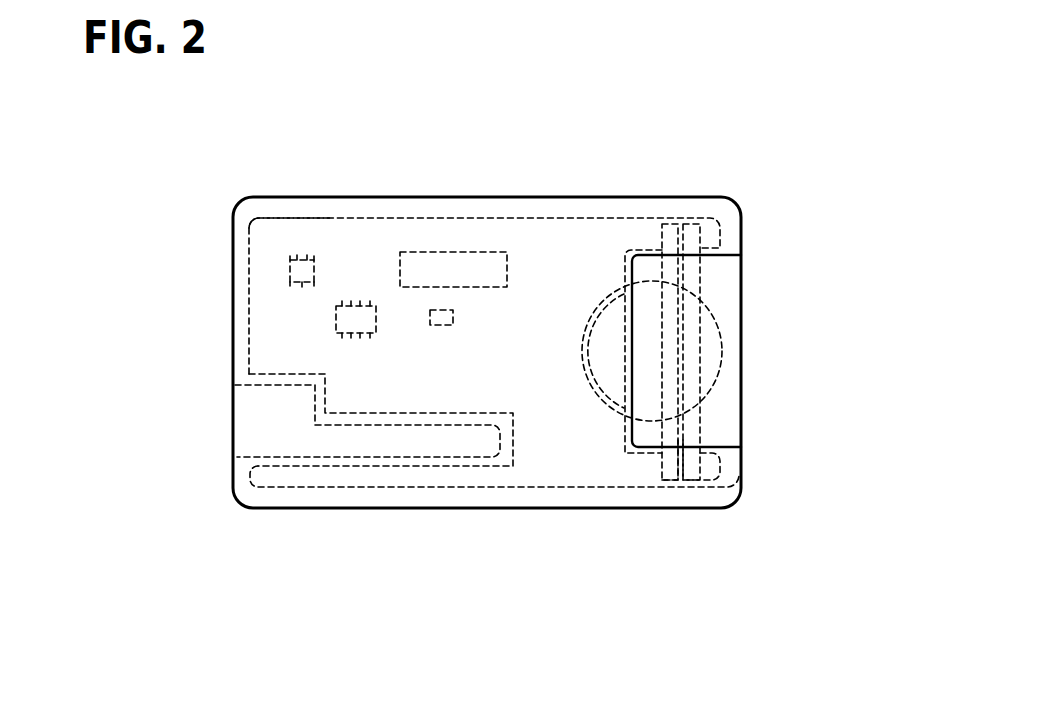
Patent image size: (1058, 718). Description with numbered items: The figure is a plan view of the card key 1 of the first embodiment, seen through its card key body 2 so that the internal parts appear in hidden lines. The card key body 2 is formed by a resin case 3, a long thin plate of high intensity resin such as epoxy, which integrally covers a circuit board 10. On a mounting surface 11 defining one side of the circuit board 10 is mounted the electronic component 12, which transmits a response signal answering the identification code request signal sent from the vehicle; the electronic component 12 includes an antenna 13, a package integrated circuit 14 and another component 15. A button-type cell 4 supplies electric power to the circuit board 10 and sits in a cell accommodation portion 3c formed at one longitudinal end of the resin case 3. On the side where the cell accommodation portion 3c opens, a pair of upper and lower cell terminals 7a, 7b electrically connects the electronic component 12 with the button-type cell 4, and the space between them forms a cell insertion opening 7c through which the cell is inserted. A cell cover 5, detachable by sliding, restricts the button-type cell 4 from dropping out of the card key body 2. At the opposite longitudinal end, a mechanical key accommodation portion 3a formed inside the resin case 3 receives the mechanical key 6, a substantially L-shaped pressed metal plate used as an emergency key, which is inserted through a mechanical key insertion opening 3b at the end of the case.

The card key 1 is at (612, 113).
The card key body 2 is at (736, 206).
The resin case 3 is at (243, 256).
The mechanical key accommodation portion 3a is at (446, 462).
The mechanical key insertion opening 3b is at (236, 457).
The cell accommodation portion 3c is at (618, 425).
The button-type cell 4 is at (717, 327).
The cell cover 5 is at (727, 280).
The mechanical key 6 is at (405, 442).
The cell terminal 7a is at (671, 216).
The cell terminal 7b is at (702, 214).
The cell insertion opening 7c is at (692, 450).
The circuit board 10 is at (279, 233).
The mounting surface 11 is at (312, 256).
The electronic component 12 is at (497, 147).
The antenna 13 is at (441, 252).
The package integrated circuit 14 is at (374, 304).
The another component 15 is at (451, 311).